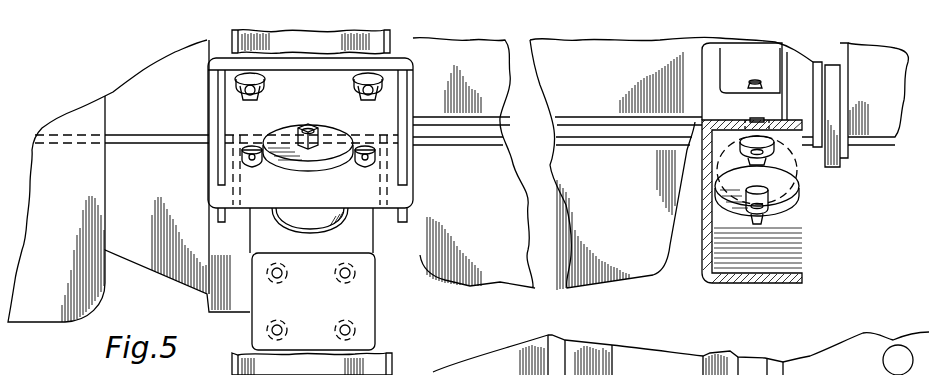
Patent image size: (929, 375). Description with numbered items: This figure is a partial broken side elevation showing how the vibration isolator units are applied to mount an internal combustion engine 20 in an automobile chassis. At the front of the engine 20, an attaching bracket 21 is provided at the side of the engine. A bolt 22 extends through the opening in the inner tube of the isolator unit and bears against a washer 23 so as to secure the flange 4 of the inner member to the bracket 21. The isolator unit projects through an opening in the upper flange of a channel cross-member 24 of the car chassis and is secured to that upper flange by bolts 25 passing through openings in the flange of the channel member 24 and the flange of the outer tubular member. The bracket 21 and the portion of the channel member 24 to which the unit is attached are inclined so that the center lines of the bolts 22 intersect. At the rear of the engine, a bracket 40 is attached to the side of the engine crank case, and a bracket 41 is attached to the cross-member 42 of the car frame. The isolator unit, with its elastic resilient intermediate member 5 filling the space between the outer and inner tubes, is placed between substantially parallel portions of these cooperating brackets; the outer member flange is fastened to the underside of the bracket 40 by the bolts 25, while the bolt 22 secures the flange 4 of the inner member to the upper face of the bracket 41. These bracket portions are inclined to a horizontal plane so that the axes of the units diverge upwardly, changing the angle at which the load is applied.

The flange 4 is at (343, 223).
The intermediate flanged tube or member 5 is at (303, 220).
The engine 20 is at (638, 293).
The attaching bracket 21 is at (713, 86).
The bolt 22 is at (314, 131).
The washer 23 is at (785, 200).
The channel cross-member 24 is at (803, 253).
The bolt 25 is at (262, 163).
The bracket 40 is at (310, 140).
The bracket 41 is at (362, 303).
The cross-member 42 is at (215, 36).